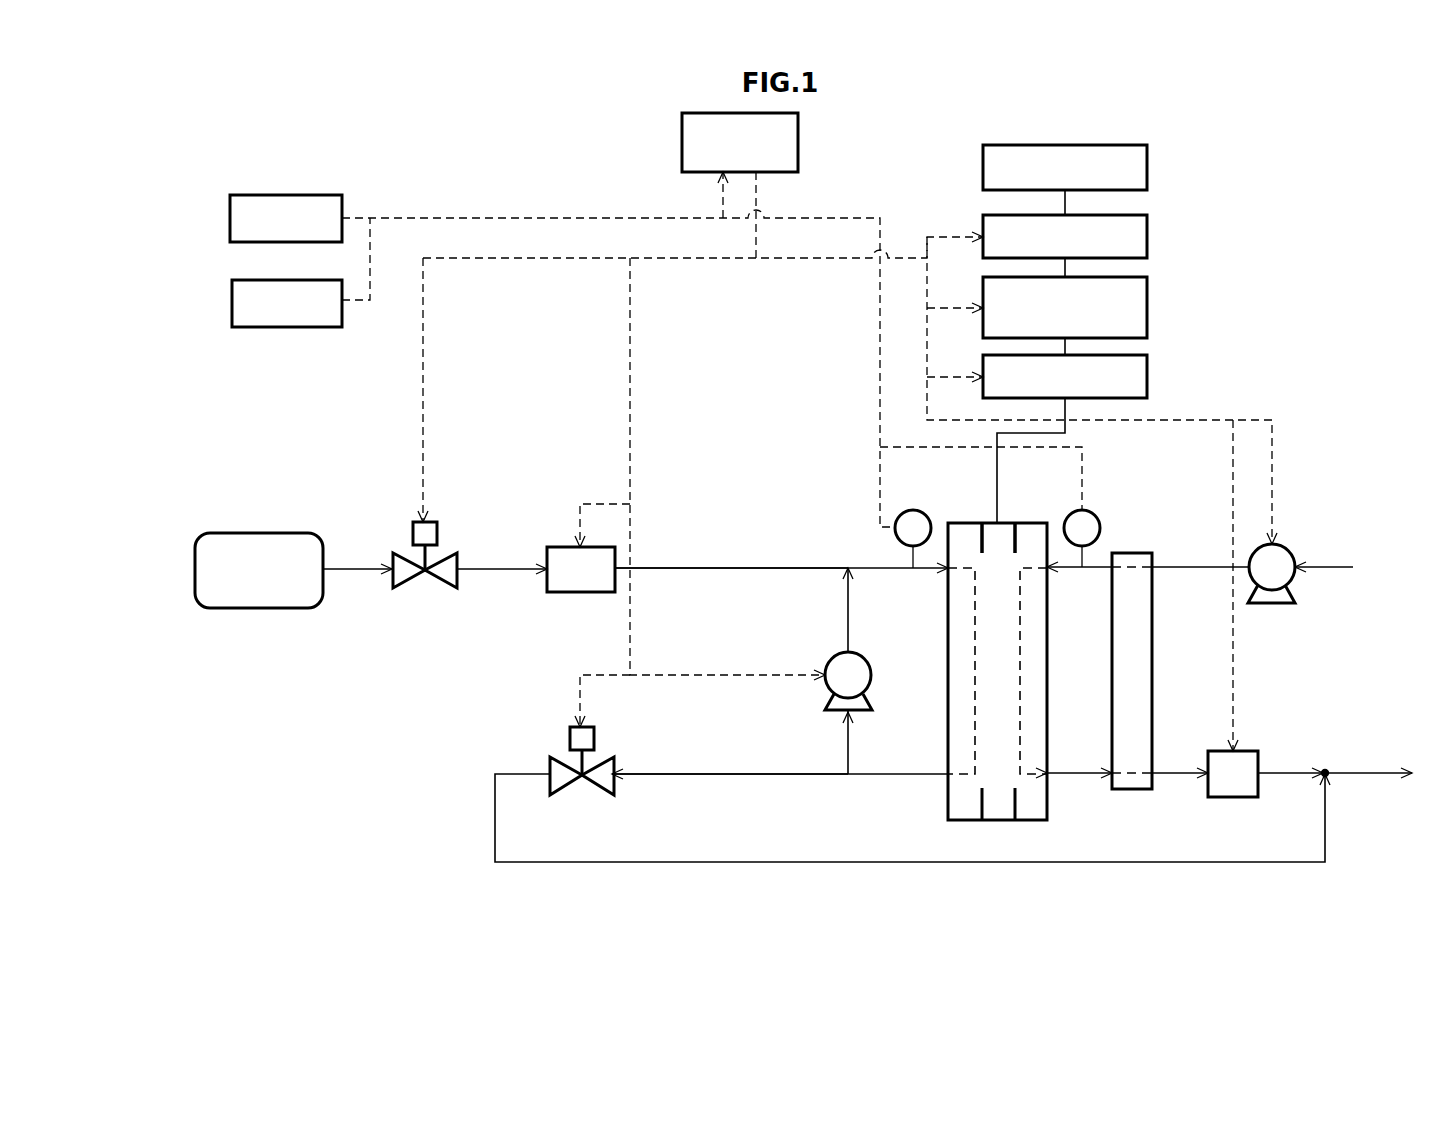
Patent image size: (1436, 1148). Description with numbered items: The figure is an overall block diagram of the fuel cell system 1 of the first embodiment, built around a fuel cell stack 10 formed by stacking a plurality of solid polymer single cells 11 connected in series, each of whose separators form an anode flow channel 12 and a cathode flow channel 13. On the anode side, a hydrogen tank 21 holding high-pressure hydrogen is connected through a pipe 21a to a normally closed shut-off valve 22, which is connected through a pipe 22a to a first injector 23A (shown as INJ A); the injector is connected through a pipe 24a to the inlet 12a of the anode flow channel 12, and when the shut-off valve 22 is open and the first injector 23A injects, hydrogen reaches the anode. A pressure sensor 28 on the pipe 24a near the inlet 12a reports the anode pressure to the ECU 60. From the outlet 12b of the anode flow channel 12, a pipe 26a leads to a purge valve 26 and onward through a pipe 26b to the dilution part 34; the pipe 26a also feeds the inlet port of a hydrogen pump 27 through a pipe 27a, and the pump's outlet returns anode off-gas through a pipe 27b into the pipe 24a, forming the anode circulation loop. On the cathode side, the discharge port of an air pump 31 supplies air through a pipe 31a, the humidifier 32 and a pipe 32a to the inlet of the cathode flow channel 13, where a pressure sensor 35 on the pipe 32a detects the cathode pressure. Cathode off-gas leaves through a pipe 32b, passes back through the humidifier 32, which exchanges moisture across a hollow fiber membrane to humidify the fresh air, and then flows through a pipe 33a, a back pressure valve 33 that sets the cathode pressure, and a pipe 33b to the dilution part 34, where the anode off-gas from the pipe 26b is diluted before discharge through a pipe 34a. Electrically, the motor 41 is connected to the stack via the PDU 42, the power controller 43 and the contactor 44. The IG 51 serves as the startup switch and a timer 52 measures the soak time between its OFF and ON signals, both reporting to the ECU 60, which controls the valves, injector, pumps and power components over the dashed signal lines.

The fuel cell system 1 is at (468, 184).
The fuel cell stack 10 is at (1122, 548).
The single cell 11 is at (973, 533).
The anode flow channel 12 is at (971, 692).
The inlet of the anode flow channel 12a is at (942, 572).
The outlet of the anode flow channel 12b is at (946, 774).
The cathode flow channel 13 is at (1024, 694).
The hydrogen tank 21 is at (260, 533).
The pipe 21a is at (356, 575).
The shut-off valve 22 is at (430, 582).
The pipe 22a is at (510, 575).
The first injector 23A is at (563, 547).
The pipe 24a is at (796, 566).
The purge valve 26 is at (590, 786).
The pipe 26a is at (696, 778).
The pipe 26b is at (762, 864).
The hydrogen pump 27 is at (828, 690).
The pipe 27a is at (848, 756).
The pipe 27b is at (846, 602).
The pressure sensor 28 is at (910, 510).
The air pump 31 is at (1292, 548).
The pipe 31a is at (1184, 573).
The humidifier 32 is at (1153, 683).
The pipe 32a is at (1068, 575).
The pipe 32b is at (1076, 778).
The back pressure valve 33 is at (1250, 751).
The pipe 33a is at (1170, 778).
The pipe 33b is at (1280, 778).
The dilution part 34 is at (1326, 766).
The pipe 34a is at (1368, 778).
The pressure sensor 35 is at (1094, 516).
The motor 41 is at (1148, 166).
The PDU 42 is at (1148, 236).
The power controller 43 is at (1148, 305).
The contactor 44 is at (1148, 375).
The IG 51 is at (284, 195).
The timer 52 is at (284, 280).
The ECU 60 is at (799, 142).